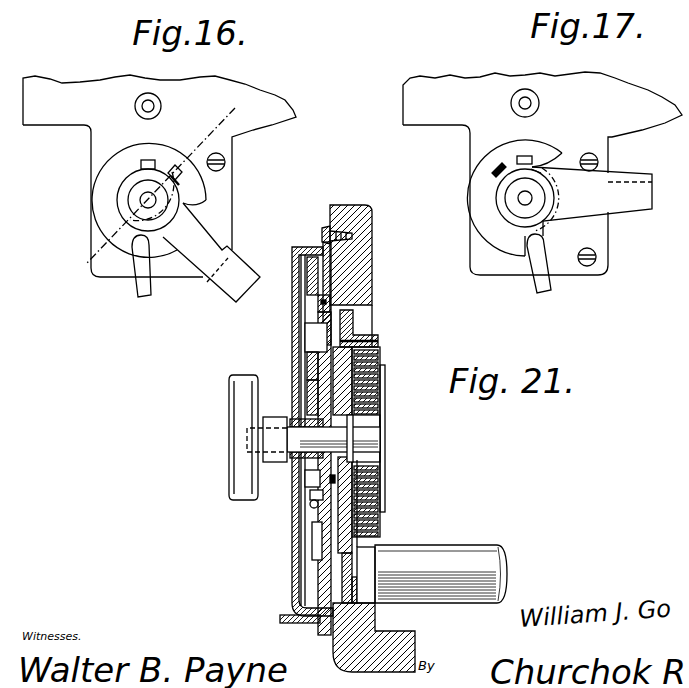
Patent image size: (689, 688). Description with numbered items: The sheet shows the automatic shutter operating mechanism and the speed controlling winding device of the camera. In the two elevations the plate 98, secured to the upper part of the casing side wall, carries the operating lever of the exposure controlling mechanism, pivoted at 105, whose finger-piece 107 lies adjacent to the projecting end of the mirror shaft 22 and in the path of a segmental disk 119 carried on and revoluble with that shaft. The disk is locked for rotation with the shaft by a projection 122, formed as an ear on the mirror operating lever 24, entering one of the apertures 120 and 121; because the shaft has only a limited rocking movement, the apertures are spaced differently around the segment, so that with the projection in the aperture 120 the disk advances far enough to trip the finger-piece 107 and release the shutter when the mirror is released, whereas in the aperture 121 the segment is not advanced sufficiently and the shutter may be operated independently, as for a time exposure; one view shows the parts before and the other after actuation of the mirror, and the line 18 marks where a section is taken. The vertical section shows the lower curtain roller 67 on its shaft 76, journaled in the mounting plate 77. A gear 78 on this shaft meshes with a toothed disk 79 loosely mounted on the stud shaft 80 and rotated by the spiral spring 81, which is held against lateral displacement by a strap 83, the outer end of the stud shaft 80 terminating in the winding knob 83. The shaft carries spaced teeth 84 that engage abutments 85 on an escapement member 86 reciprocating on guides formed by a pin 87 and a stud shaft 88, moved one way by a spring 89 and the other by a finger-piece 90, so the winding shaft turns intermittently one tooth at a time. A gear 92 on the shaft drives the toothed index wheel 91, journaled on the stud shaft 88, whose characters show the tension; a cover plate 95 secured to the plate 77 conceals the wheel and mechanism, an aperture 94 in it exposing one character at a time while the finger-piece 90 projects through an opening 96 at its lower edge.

In FIG. 16, the section line 18 is at (157, 195).
In FIG. 16, the mirror shaft 22 is at (147, 200).
In FIG. 17, the mirror shaft 22 is at (523, 198).
In FIG. 16, the mirror operating lever 24 is at (211, 252).
In FIG. 17, the mirror operating lever 24 is at (592, 201).
In FIG. 21, the lower curtain roller 67 is at (441, 574).
In FIG. 21, the shaft 76 is at (363, 577).
In FIG. 21, the mounting plate 77 is at (330, 275).
In FIG. 21, the gear 78 is at (360, 603).
In FIG. 21, the toothed disk 79 is at (353, 325).
In FIG. 21, the stud shaft 80 is at (367, 439).
In FIG. 21, the spiral spring 81 is at (372, 515).
In FIG. 21, the winding knob 83 is at (240, 413).
In FIG. 21, the spaced teeth 84 is at (334, 479).
In FIG. 21, the abutments 85 is at (320, 386).
In FIG. 21, the escapement member 86 is at (316, 370).
In FIG. 21, the pin 87 is at (315, 548).
In FIG. 21, the stud shaft 88 is at (312, 337).
In FIG. 21, the spring 89 is at (312, 511).
In FIG. 21, the finger-piece 90 is at (308, 622).
In FIG. 21, the toothed index wheel 91 is at (318, 312).
In FIG. 21, the gear 92 is at (313, 470).
In FIG. 21, the aperture 94 is at (294, 272).
In FIG. 21, the cover plate 95 is at (306, 348).
In FIG. 21, the opening 96 is at (320, 625).
In FIG. 16, the plate 98 is at (159, 176).
In FIG. 17, the plate 98 is at (542, 173).
In FIG. 16, the pivot 105 is at (153, 105).
In FIG. 17, the pivot 105 is at (527, 104).
In FIG. 16, the finger-piece 107 is at (143, 294).
In FIG. 17, the finger-piece 107 is at (540, 282).
In FIG. 16, the segmental disk 119 is at (110, 212).
In FIG. 17, the segmental disk 119 is at (483, 212).
In FIG. 16, the aperture 120 is at (180, 170).
In FIG. 17, the aperture 120 is at (527, 157).
In FIG. 16, the aperture 121 is at (150, 160).
In FIG. 17, the aperture 121 is at (500, 164).
In FIG. 16, the projection 122 is at (180, 178).
In FIG. 17, the projection 122 is at (533, 164).